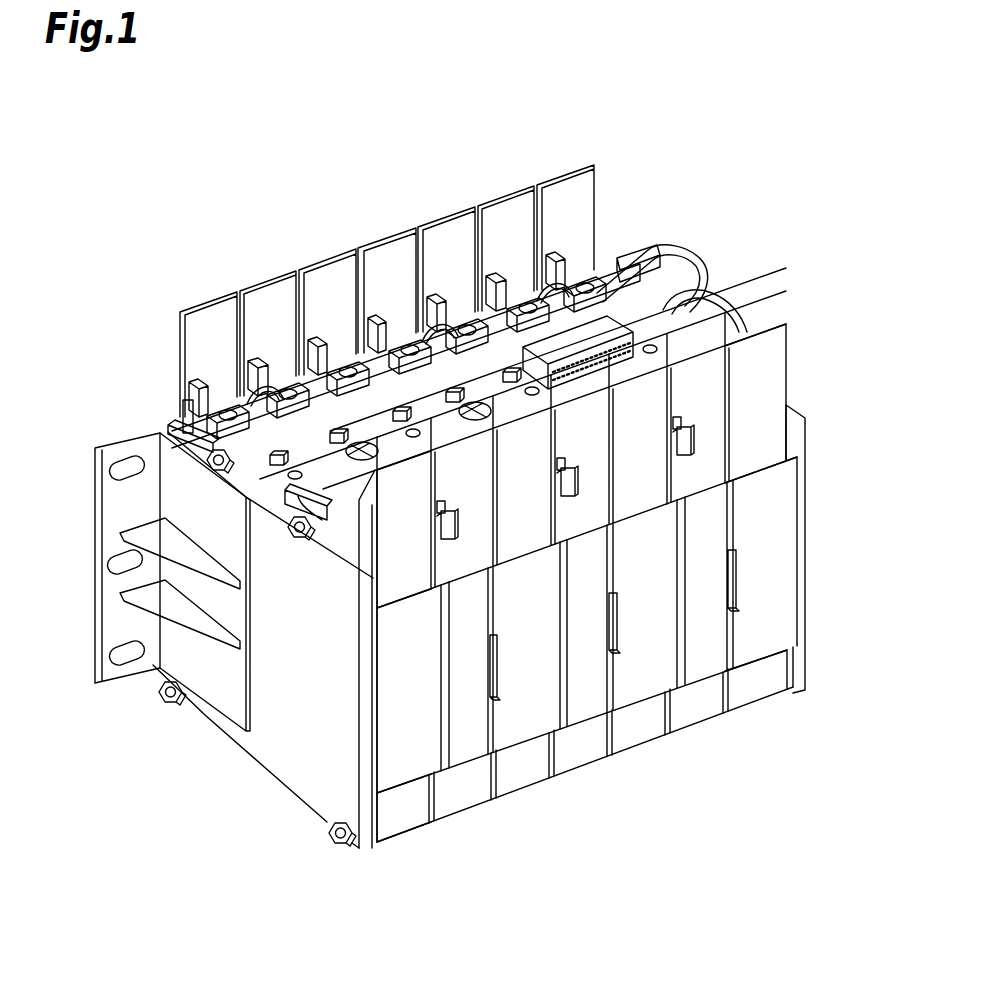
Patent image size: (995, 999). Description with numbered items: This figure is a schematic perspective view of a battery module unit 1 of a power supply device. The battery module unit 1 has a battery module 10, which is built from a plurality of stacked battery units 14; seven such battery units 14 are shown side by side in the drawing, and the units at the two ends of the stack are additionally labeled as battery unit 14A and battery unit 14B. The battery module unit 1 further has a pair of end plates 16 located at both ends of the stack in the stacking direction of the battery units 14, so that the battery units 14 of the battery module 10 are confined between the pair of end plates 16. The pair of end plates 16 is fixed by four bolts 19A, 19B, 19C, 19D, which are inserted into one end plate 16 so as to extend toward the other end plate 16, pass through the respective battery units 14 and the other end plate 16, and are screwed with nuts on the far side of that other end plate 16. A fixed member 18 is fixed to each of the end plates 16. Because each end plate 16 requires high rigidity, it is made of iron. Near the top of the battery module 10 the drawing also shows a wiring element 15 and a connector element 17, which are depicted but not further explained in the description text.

The battery module unit 1 is at (225, 180).
The battery module 10 is at (206, 283).
The battery unit 14 is at (476, 831).
The first battery cell 14A is at (415, 852).
The last battery cell 14B is at (780, 714).
The wire harness 15 is at (727, 297).
The end plate 16 is at (806, 560).
The connector 17 is at (603, 330).
The fixed member 18 is at (130, 673).
The bolt 19A is at (212, 452).
The bolt 19B is at (296, 540).
The bolt 19C is at (170, 705).
The bolt 19D is at (334, 842).